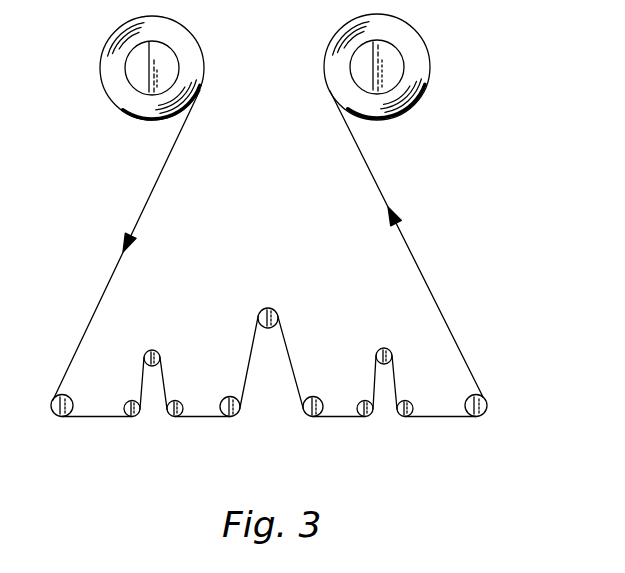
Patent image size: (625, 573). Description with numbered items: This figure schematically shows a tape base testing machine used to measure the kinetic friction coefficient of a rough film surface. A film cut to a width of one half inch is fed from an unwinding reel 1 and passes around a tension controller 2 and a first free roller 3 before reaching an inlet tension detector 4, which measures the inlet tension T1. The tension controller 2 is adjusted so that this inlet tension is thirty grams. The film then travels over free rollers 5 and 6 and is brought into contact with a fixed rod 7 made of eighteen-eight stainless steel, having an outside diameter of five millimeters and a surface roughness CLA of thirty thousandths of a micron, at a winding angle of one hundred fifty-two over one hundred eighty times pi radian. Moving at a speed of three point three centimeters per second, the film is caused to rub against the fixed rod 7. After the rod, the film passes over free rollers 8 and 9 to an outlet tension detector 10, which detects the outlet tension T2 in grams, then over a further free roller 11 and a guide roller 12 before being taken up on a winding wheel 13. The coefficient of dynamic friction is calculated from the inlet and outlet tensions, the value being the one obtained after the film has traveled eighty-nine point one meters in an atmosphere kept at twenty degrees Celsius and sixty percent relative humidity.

The unwinding reel 1 is at (128, 62).
The tension controller 2 is at (50, 405).
The free roller 3 is at (132, 417).
The inlet tension detector 4 is at (152, 350).
The free roller 5 is at (180, 417).
The free roller 6 is at (238, 414).
The fixed rod 7 is at (270, 308).
The free roller 8 is at (307, 418).
The free roller 9 is at (365, 417).
The outlet tension detector 10 is at (380, 350).
The free roller 11 is at (412, 413).
The guide roller 12 is at (487, 408).
The winding wheel 13 is at (390, 53).